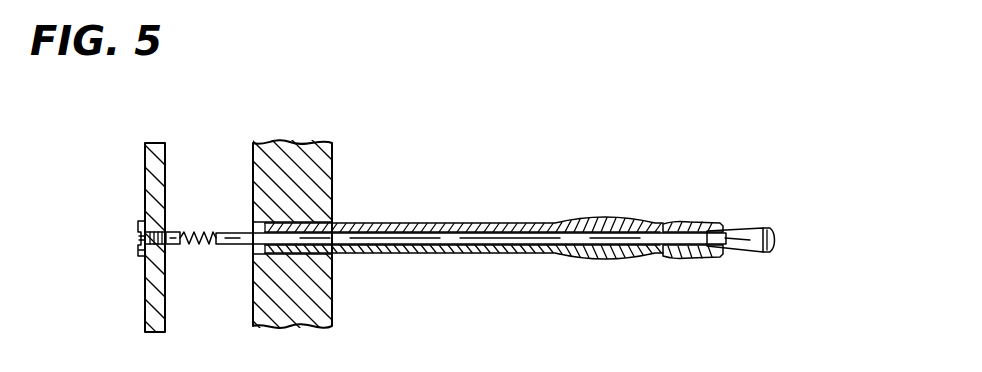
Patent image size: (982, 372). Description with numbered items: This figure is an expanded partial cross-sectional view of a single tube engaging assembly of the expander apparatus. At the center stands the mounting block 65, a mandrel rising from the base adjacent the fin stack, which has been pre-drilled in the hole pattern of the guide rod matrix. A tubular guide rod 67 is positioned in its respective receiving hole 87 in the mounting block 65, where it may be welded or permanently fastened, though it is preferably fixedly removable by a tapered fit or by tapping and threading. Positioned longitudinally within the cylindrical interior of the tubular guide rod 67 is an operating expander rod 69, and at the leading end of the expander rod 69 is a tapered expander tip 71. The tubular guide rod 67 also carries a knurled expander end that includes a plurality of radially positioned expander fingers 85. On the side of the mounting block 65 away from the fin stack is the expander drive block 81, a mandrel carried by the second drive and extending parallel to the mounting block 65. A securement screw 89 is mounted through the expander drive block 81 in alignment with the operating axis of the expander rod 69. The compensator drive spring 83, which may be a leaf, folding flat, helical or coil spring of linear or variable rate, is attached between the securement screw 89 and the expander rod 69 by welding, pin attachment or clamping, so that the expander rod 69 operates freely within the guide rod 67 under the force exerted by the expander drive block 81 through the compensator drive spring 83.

The mounting block 65 is at (325, 156).
The tubular guide rod 67 is at (506, 231).
The expander rod 69 is at (514, 255).
The tapered expander tip 71 is at (760, 220).
The expander drive block 81 is at (145, 160).
The compensator drive spring 83 is at (208, 230).
The expander fingers 85 is at (682, 202).
The receiving hole 87 is at (334, 223).
The securement screw 89 is at (137, 230).